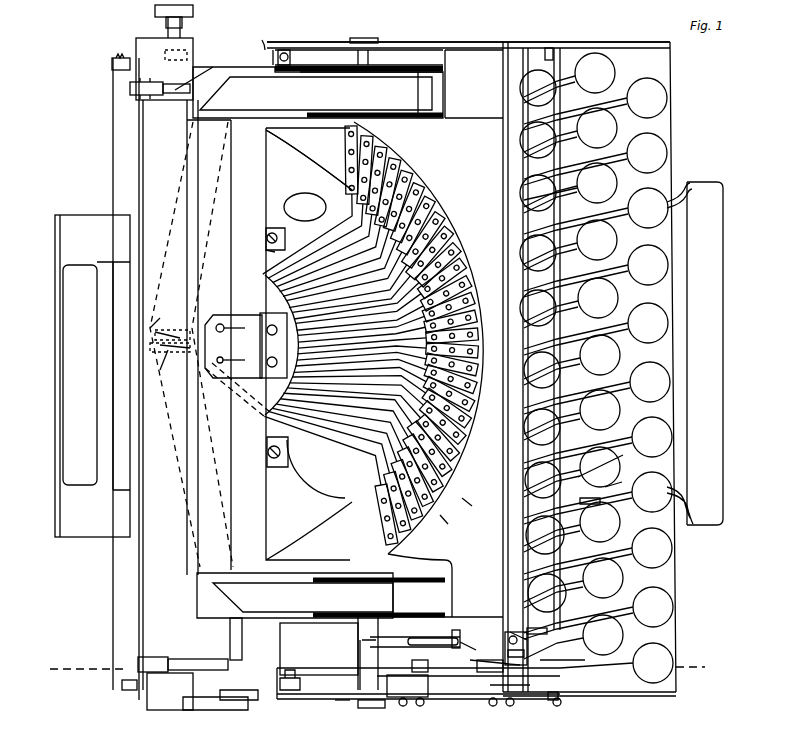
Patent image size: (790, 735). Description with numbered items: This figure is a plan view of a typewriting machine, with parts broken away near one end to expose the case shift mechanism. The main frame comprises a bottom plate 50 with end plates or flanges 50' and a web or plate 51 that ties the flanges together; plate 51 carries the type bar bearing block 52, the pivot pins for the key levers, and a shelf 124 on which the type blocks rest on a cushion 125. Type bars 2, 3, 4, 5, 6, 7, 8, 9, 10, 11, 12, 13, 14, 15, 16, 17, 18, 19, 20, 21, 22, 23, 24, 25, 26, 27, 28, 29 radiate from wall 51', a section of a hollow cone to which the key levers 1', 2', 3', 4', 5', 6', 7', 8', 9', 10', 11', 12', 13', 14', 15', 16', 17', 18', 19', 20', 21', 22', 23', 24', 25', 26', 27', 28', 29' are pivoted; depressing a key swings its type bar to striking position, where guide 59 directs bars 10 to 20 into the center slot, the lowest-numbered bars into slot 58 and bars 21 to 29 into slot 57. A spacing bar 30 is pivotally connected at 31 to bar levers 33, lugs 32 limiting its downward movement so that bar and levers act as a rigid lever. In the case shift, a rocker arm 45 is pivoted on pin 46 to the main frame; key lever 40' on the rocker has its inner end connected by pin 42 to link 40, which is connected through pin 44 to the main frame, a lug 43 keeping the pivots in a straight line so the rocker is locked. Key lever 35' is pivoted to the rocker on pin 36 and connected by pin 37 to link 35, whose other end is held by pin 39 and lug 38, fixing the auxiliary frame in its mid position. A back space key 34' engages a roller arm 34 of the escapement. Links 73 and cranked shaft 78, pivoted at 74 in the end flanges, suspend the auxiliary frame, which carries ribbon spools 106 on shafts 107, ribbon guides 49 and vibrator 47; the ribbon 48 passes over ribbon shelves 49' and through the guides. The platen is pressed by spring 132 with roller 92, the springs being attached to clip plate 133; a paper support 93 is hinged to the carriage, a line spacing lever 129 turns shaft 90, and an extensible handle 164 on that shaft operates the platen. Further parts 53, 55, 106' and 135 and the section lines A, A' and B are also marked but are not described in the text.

The type bar 2 is at (335, 479).
The type bar 3 is at (346, 471).
The type bar 4 is at (355, 462).
The type bar 5 is at (368, 453).
The type bar 6 is at (375, 442).
The type bar 7 is at (378, 431).
The type bar 8 is at (385, 420).
The type bar 9 is at (388, 409).
The type bar 10 is at (394, 397).
The type bar 11 is at (398, 386).
The type bar 12 is at (400, 374).
The type bar 13 is at (406, 362).
The type bar 14 is at (409, 352).
The type bar 15 is at (410, 340).
The type bar 16 is at (410, 331).
The type bar 17 is at (410, 319).
The type bar 18 is at (399, 308).
The type bar 19 is at (396, 296).
The type bar 20 is at (395, 285).
The type bar 21 is at (390, 273).
The type bar 22 is at (386, 263).
The type bar 23 is at (383, 251).
The type bar 24 is at (378, 241).
The type bar 25 is at (368, 232).
The type bar 26 is at (359, 223).
The type bar 27 is at (351, 215).
The type bar 28 is at (338, 205).
The type bar 29 is at (310, 200).
The key lever 1' is at (547, 593).
The key lever 2' is at (598, 613).
The key lever 3' is at (573, 583).
The key lever 4' is at (545, 535).
The key lever 5' is at (598, 554).
The key lever 6' is at (572, 527).
The key lever 7' is at (543, 480).
The key lever 8' is at (598, 498).
The key lever 9' is at (572, 472).
The key lever 10' is at (542, 427).
The key lever 11' is at (598, 443).
The key lever 12' is at (572, 415).
The key lever 13' is at (597, 388).
The key lever 14' is at (542, 370).
The key lever 15' is at (572, 360).
The key lever 16' is at (596, 329).
The key lever 17' is at (538, 308).
The key lever 18' is at (571, 303).
The key lever 19' is at (596, 271).
The key lever 20' is at (538, 253).
The key lever 21' is at (570, 245).
The key lever 22' is at (596, 214).
The key lever 23' is at (538, 193).
The key lever 24' is at (570, 188).
The key lever 25' is at (595, 159).
The key lever 26' is at (538, 140).
The key lever 27' is at (570, 133).
The key lever 28' is at (595, 104).
The key lever 29' is at (538, 88).
The back space key 34' is at (569, 78).
The key lever 35' is at (573, 637).
The key lever 40' is at (616, 663).
The spacing bar 30 is at (695, 353).
The pivot 31 is at (622, 479).
The lugs 32 is at (607, 465).
The bar levers 33 is at (583, 491).
The roller arm 34 is at (305, 203).
The link 35 is at (424, 633).
The pin 36 is at (517, 630).
The pin 37 is at (454, 634).
The lug 38 is at (471, 650).
The pin 39 is at (360, 660).
The link 40 is at (468, 661).
The pin 42 is at (502, 670).
The lug 43 is at (497, 690).
The pin 44 is at (410, 673).
The rocker arm 45 is at (505, 636).
The pin 46 is at (510, 632).
The vibrator 47 is at (150, 327).
The ribbon 48 is at (299, 342).
The ribbon guides 49 is at (256, 339).
The ribbon shelves 49' is at (361, 341).
The bottom plate 50 is at (475, 389).
The end plates or flanges 50' is at (468, 28).
The web or plate 51 is at (396, 367).
The wall 51' is at (312, 342).
The type bar bearing block 52 is at (266, 234).
The bracket 53 is at (266, 253).
The bracket 55 is at (112, 62).
The slot 57 is at (224, 330).
The slot 58 is at (224, 360).
The guide 59 is at (246, 345).
The links 73 is at (286, 60).
The pivot 74 is at (282, 48).
The cranked shaft 78 is at (556, 167).
The shaft 90 is at (166, 27).
The roller 92 is at (130, 88).
The paper support 93 is at (92, 376).
The ribbon spools 106 is at (446, 67).
The plate 106' is at (350, 653).
The shafts 107 is at (365, 42).
The shelf 124 is at (478, 508).
The cushion 125 is at (455, 525).
The line spacing lever 129 is at (235, 705).
The spring 132 is at (175, 90).
The clip plate 133 is at (198, 648).
The type bar 135 is at (172, 352).
The extensible handle 164 is at (155, 12).
The section line A is at (73, 678).
The section line A' is at (562, 637).
The section line B is at (696, 668).